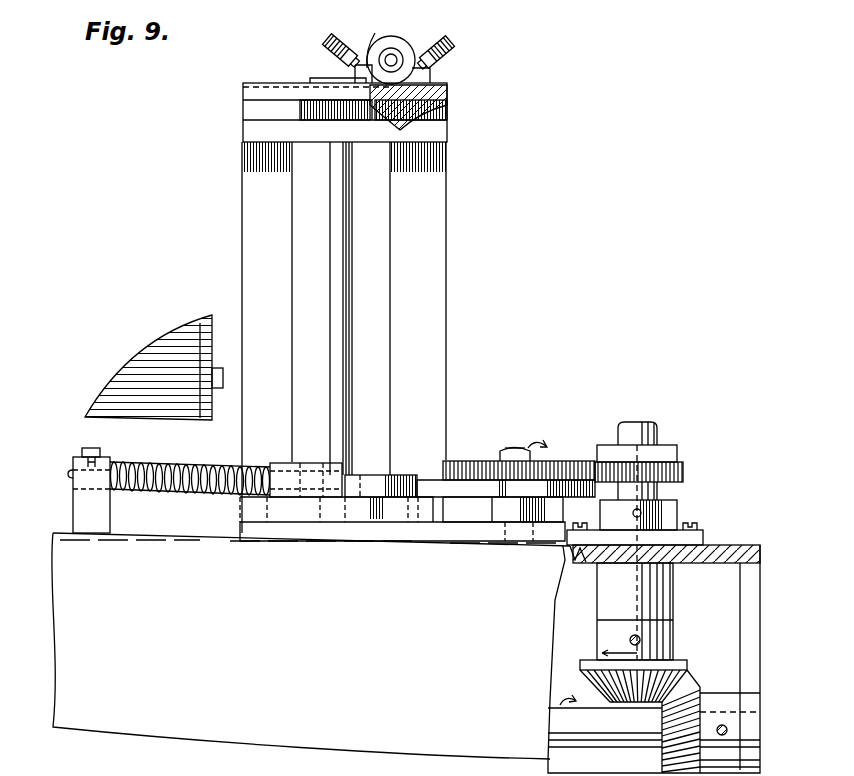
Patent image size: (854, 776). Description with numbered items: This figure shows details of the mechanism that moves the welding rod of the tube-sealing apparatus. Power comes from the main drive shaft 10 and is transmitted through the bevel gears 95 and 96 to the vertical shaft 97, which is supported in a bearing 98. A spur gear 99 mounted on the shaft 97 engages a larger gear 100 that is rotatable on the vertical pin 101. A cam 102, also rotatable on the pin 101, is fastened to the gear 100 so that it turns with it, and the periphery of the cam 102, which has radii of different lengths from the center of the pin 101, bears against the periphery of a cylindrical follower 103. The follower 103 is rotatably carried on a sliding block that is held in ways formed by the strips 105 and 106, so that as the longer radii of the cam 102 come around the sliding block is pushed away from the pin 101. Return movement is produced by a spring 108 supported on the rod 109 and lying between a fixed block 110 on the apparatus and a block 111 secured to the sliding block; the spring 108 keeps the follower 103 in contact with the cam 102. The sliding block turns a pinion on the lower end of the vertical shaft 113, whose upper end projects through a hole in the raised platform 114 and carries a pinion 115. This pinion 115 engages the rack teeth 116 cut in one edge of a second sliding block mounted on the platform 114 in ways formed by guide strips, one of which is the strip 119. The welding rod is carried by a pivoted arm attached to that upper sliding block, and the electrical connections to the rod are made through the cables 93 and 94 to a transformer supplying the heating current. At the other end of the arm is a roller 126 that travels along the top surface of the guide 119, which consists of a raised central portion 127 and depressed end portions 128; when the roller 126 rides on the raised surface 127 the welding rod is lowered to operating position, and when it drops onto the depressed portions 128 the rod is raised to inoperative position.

The main drive shaft 10 is at (600, 733).
The cable 93 is at (335, 46).
The cable 94 is at (455, 44).
The bevel gear 95 is at (675, 767).
The bevel gear 96 is at (580, 673).
The vertical shaft 97 is at (652, 418).
The bearing 98 is at (677, 512).
The spur gear 99 is at (685, 466).
The gear 100 is at (470, 461).
The vertical pin 101 is at (533, 422).
The cam 102 is at (503, 509).
The cylindrical follower 103 is at (403, 476).
The strip 105 is at (247, 512).
The strip 106 is at (242, 499).
The spring 108 is at (192, 463).
The rod 109 is at (70, 472).
The fixed block 110 is at (85, 501).
The block 111 is at (318, 464).
The vertical shaft 113 is at (347, 271).
The raised platform 114 is at (243, 125).
The pinion 115 is at (327, 113).
The rack teeth 116 is at (447, 110).
The strip 119 is at (243, 90).
The roller 126 is at (402, 42).
The raised central portion 127 is at (372, 41).
The depressed end portions 128 is at (278, 78).